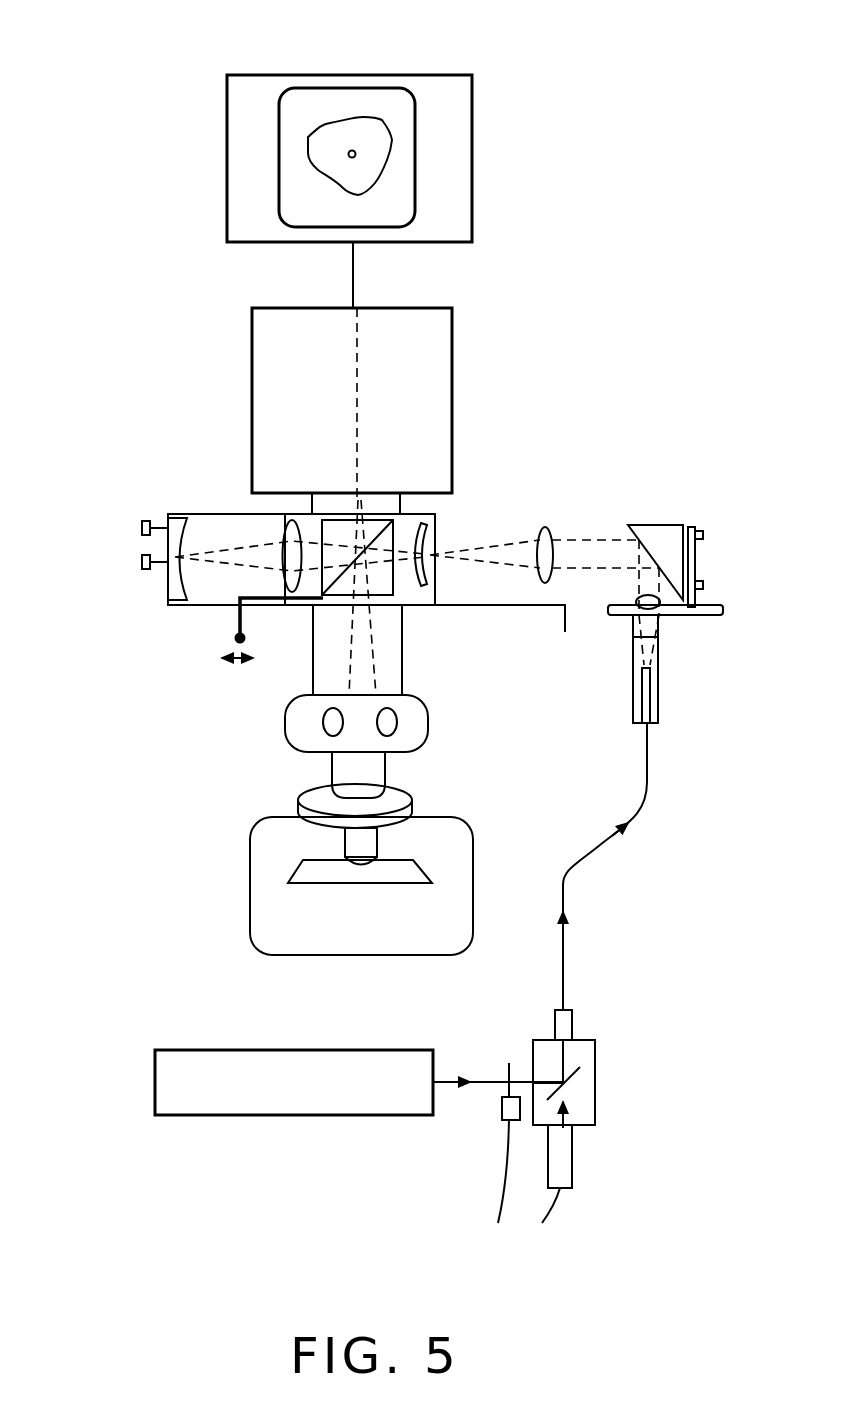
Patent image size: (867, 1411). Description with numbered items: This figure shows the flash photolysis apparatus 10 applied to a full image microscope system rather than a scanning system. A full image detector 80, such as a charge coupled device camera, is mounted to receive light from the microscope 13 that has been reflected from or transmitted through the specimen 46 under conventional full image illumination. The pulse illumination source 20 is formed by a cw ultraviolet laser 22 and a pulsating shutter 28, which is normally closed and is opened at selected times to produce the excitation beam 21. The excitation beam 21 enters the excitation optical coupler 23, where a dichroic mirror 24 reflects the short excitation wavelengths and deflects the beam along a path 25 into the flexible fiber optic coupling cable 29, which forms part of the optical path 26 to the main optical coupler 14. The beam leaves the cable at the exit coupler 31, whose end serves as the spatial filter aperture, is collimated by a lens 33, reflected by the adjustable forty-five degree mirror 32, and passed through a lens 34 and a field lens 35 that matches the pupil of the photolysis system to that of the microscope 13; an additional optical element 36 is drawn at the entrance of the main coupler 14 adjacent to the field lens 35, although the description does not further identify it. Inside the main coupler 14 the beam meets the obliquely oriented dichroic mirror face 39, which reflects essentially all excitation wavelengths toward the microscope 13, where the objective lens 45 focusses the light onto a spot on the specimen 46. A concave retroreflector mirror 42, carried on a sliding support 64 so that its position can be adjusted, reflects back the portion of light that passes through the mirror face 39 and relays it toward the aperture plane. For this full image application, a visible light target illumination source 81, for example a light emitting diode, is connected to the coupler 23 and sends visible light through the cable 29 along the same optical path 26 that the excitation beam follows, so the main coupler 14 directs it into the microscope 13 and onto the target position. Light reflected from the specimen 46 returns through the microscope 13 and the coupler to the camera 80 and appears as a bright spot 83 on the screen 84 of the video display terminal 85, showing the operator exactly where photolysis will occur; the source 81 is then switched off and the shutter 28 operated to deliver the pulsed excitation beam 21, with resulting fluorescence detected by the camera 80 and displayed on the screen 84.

The flash photolysis apparatus 10 is at (172, 638).
The microscope 13 is at (282, 722).
The main optical coupler 14 is at (232, 512).
The pulse illumination source 20 is at (355, 1042).
The excitation beam 21 is at (582, 540).
The cw ultraviolet laser 22 is at (300, 1115).
The excitation optical coupler 23 is at (597, 1065).
The dichroic mirror 24 is at (575, 1085).
The path 25 is at (565, 1052).
The optical path 26 is at (637, 840).
The pulsating shutter 28 is at (500, 1112).
The fiber optic coupling cable 29 is at (647, 782).
The exit coupler 31 is at (642, 673).
The mirror 32 is at (670, 525).
The lens 33 is at (640, 595).
The lens 34 is at (547, 527).
The field lens 35 is at (440, 563).
The lens 36 is at (430, 535).
The mirror face 39 is at (340, 587).
The retroreflector mirror 42 is at (165, 583).
The objective lens 45 is at (375, 860).
The specimen 46 is at (360, 867).
The sliding support 64 is at (238, 622).
The full image detector 80 is at (452, 335).
The visible light target illumination source 81 is at (573, 1165).
The bright spot 83 is at (356, 153).
The screen 84 is at (408, 193).
The video display terminal 85 is at (455, 75).